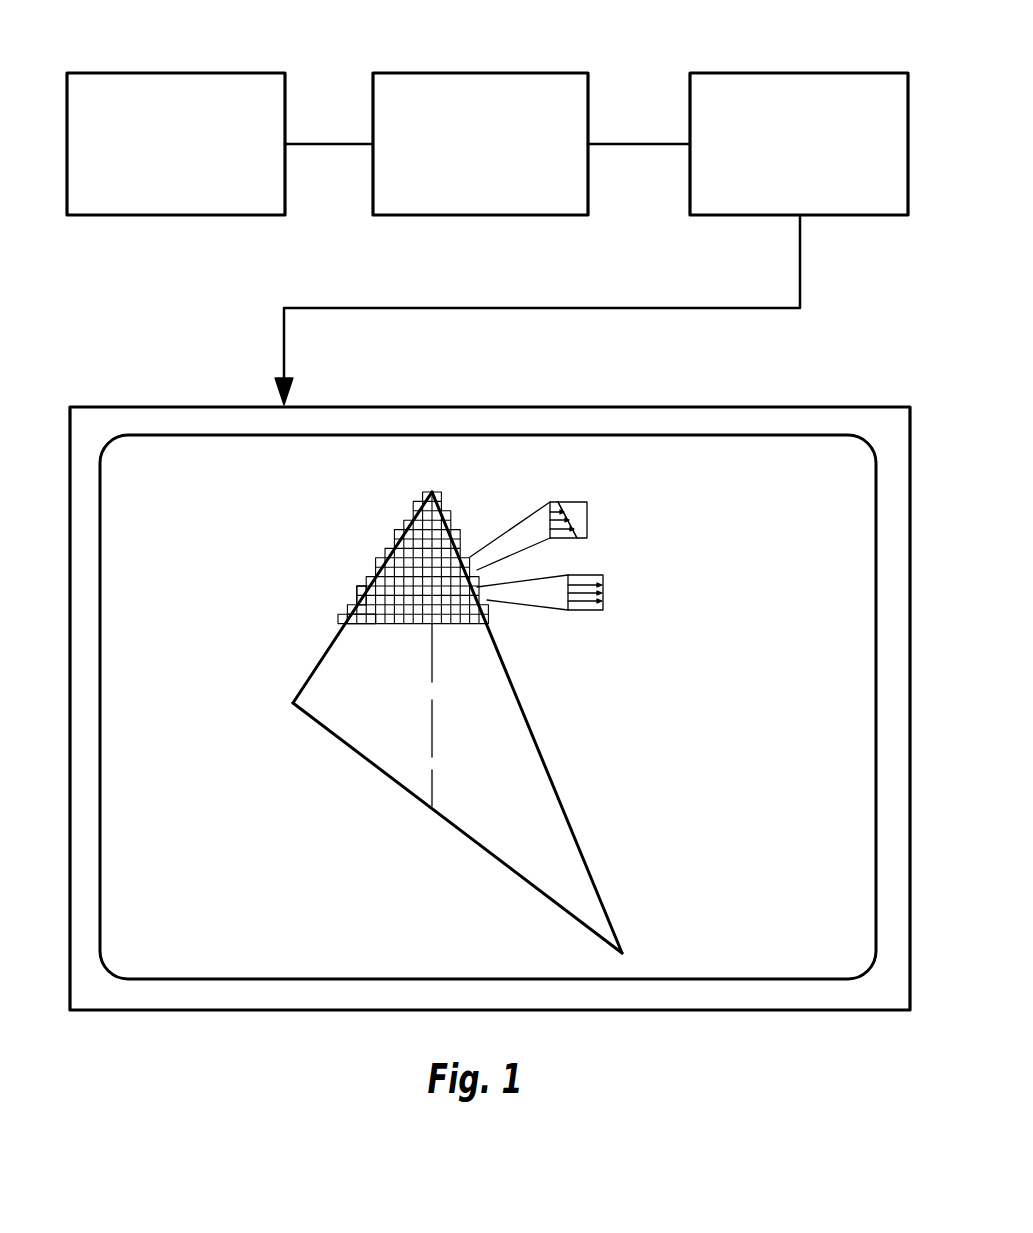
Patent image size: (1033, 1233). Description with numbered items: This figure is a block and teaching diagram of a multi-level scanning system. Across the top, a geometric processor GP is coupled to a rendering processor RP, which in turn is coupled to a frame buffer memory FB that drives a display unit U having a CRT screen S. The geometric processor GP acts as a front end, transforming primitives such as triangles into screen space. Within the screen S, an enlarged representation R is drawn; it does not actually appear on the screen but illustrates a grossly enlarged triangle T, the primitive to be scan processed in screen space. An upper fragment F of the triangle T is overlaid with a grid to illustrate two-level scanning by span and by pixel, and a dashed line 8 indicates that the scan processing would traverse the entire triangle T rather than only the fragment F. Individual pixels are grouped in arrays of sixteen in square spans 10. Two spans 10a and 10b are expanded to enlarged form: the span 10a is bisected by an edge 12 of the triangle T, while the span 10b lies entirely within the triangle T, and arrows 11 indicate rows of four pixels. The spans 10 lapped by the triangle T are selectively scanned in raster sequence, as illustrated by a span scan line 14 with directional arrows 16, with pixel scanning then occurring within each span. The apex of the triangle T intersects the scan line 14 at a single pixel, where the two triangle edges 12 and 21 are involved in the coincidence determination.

The geometric processor GP is at (113, 73).
The rendering processor RP is at (440, 73).
The frame buffer memory FB is at (763, 73).
The display unit U is at (70, 620).
The CRT screen S is at (112, 825).
The triangle T is at (445, 711).
The upper fragment F is at (458, 522).
The enlarged representation R is at (246, 656).
The dashed line 8 is at (432, 792).
The square spans 10 is at (374, 600).
The span 10a is at (588, 513).
The span 10b is at (603, 593).
The arrows 11 is at (583, 583).
The edge 12 is at (533, 735).
The span scan line 14 is at (438, 628).
The directional arrows 16 is at (370, 624).
The triangle edge 21 is at (326, 655).